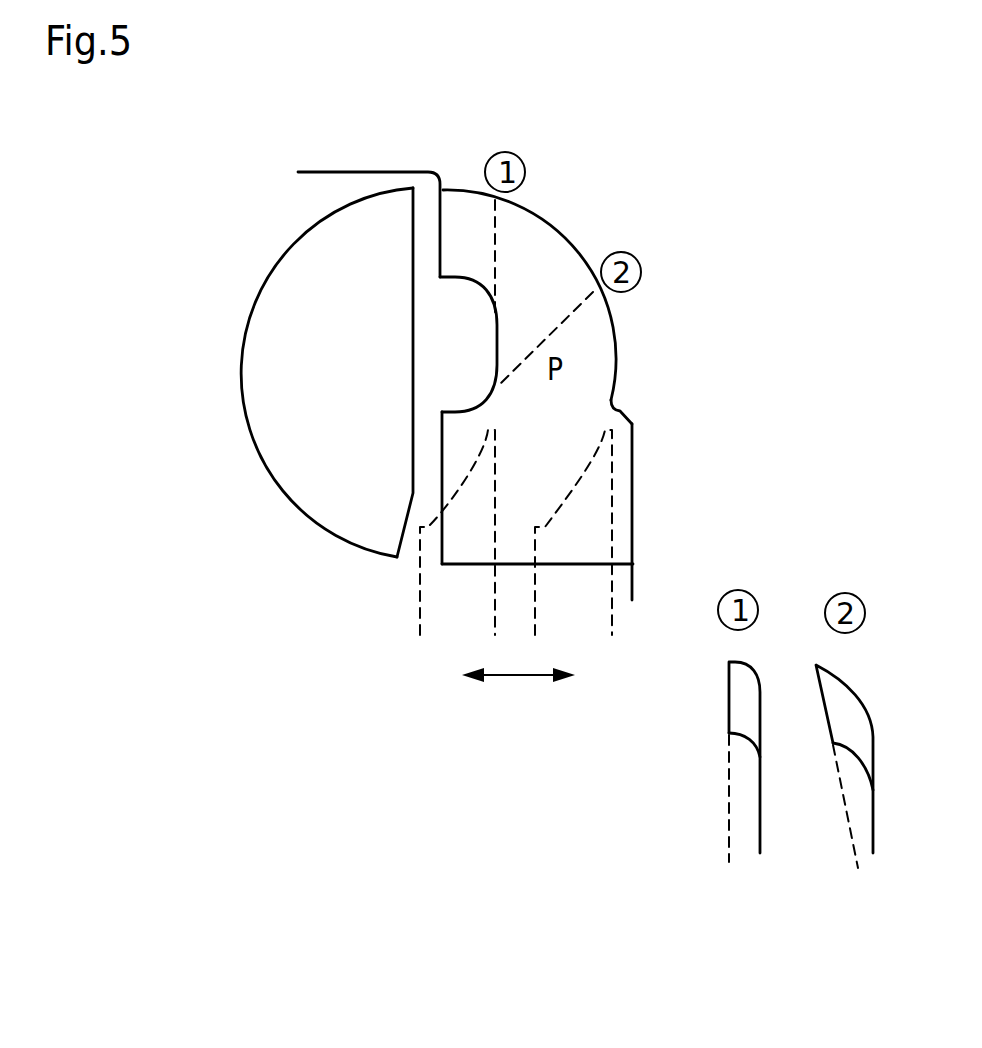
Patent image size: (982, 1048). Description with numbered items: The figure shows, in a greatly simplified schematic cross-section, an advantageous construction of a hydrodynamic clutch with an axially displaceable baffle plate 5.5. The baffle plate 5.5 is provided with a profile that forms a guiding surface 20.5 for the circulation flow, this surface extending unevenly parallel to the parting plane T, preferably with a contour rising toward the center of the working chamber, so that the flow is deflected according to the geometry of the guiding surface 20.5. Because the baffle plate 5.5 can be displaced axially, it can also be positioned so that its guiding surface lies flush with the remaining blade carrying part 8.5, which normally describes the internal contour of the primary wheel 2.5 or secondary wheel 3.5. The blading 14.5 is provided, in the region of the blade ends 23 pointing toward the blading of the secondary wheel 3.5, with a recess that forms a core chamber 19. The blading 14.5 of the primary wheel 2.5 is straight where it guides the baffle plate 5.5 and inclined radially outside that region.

The primary wheel 2.5 is at (590, 390).
The secondary wheel 3.5 is at (282, 400).
The baffle plate 5.5 is at (448, 606).
The blade carrying part 8.5 is at (633, 463).
The blading 14.5 is at (308, 280).
The core chamber 19 is at (466, 363).
The guiding surface 20.5 is at (467, 482).
The blade ends 23 is at (440, 228).